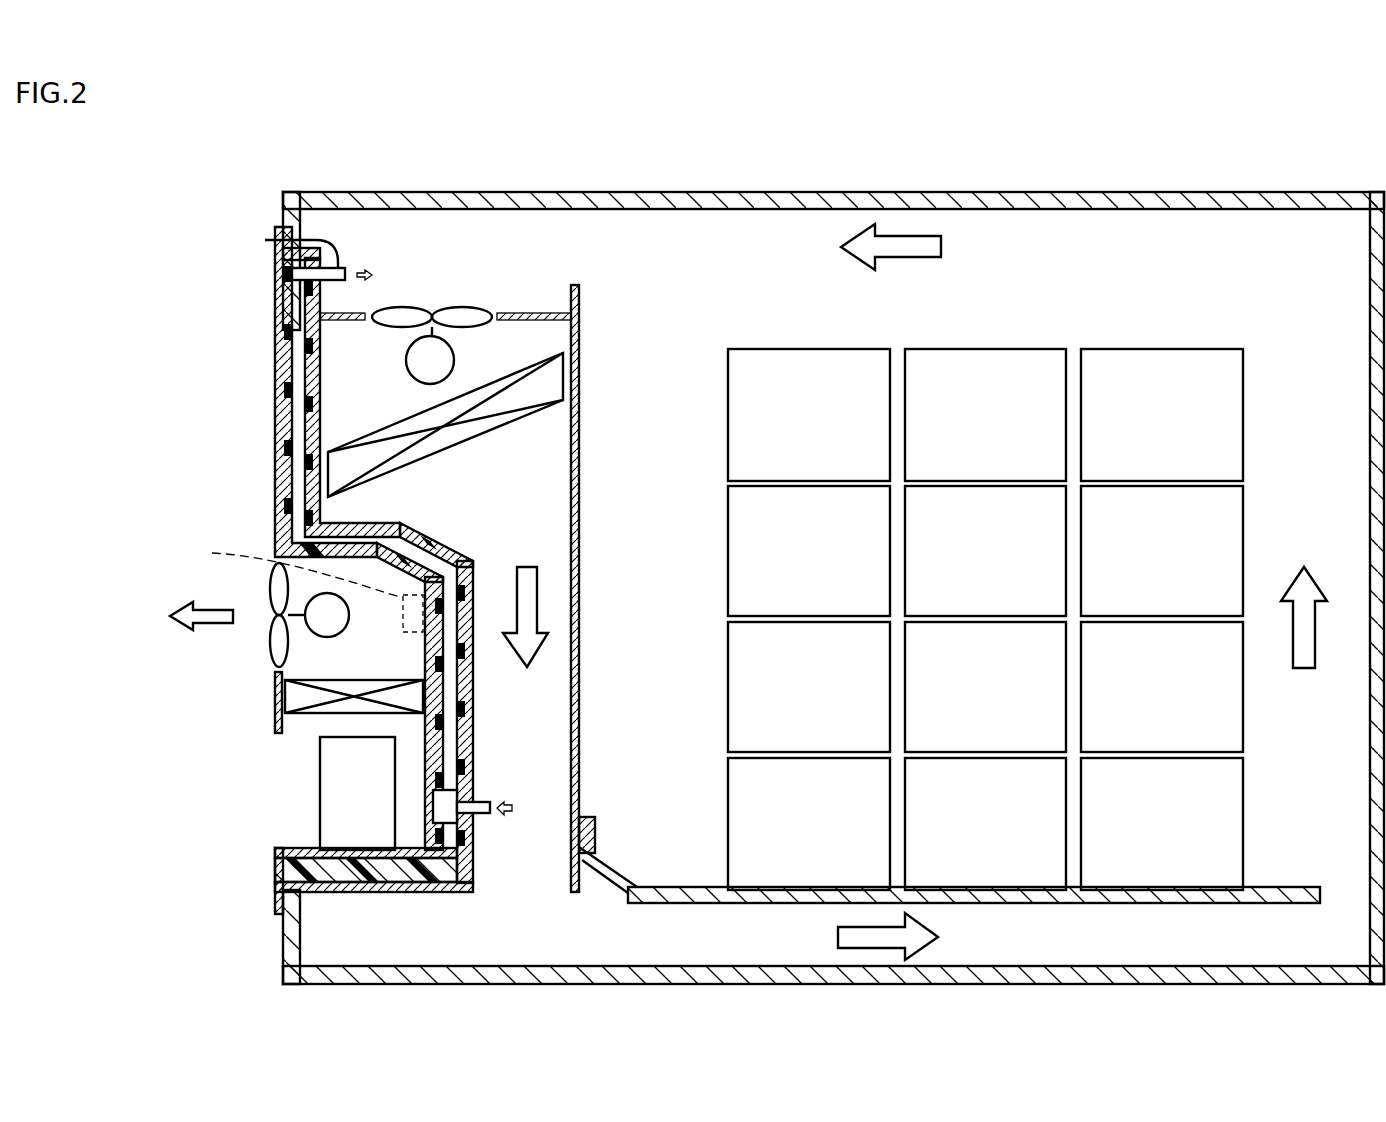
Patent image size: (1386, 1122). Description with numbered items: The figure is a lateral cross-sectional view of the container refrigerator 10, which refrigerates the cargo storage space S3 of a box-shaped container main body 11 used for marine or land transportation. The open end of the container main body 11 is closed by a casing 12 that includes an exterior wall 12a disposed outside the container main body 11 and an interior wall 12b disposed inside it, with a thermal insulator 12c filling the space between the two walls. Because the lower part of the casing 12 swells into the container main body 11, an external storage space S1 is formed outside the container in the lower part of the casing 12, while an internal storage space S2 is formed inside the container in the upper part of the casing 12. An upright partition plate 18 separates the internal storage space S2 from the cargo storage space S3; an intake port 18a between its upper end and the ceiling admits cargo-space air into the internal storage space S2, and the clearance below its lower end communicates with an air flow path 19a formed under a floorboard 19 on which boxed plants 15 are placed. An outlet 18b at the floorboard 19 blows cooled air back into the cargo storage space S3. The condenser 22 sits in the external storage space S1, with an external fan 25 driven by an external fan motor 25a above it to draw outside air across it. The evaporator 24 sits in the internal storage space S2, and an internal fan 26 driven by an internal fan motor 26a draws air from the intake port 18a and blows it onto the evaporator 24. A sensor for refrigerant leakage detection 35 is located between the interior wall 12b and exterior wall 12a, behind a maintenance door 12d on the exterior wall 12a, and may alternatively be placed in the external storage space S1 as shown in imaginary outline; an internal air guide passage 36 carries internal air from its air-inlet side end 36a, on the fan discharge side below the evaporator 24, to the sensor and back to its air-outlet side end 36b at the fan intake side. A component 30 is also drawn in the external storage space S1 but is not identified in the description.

The container refrigerator 10 is at (250, 170).
The container main body 11 is at (822, 186).
The casing 12 is at (268, 880).
The exterior wall 12a is at (275, 508).
The interior wall 12b is at (473, 870).
The thermal insulator 12c is at (435, 548).
The door 12d is at (425, 770).
The plants 15 is at (818, 349).
The partition plate 18 is at (579, 536).
The intake port 18a is at (578, 285).
The outlet 18b is at (1322, 895).
The floorboard 19 is at (682, 887).
The air flow path 19a is at (795, 898).
The condenser 22 is at (420, 698).
The evaporator 24 is at (563, 378).
The external fan 25 is at (270, 573).
The external fan motor 25a is at (330, 637).
The internal fan 26 is at (405, 308).
The internal fan motor 26a is at (455, 362).
The compressor 30 is at (400, 766).
The sensor for refrigerant leakage detection 35 is at (440, 812).
The internal air guide passage 36 is at (298, 372).
The air-inlet side end 36a is at (480, 814).
The air-outlet side end 36b is at (283, 243).
The external storage space S1 is at (358, 575).
The internal storage space S2 is at (550, 480).
The cargo storage space S3 is at (1050, 252).